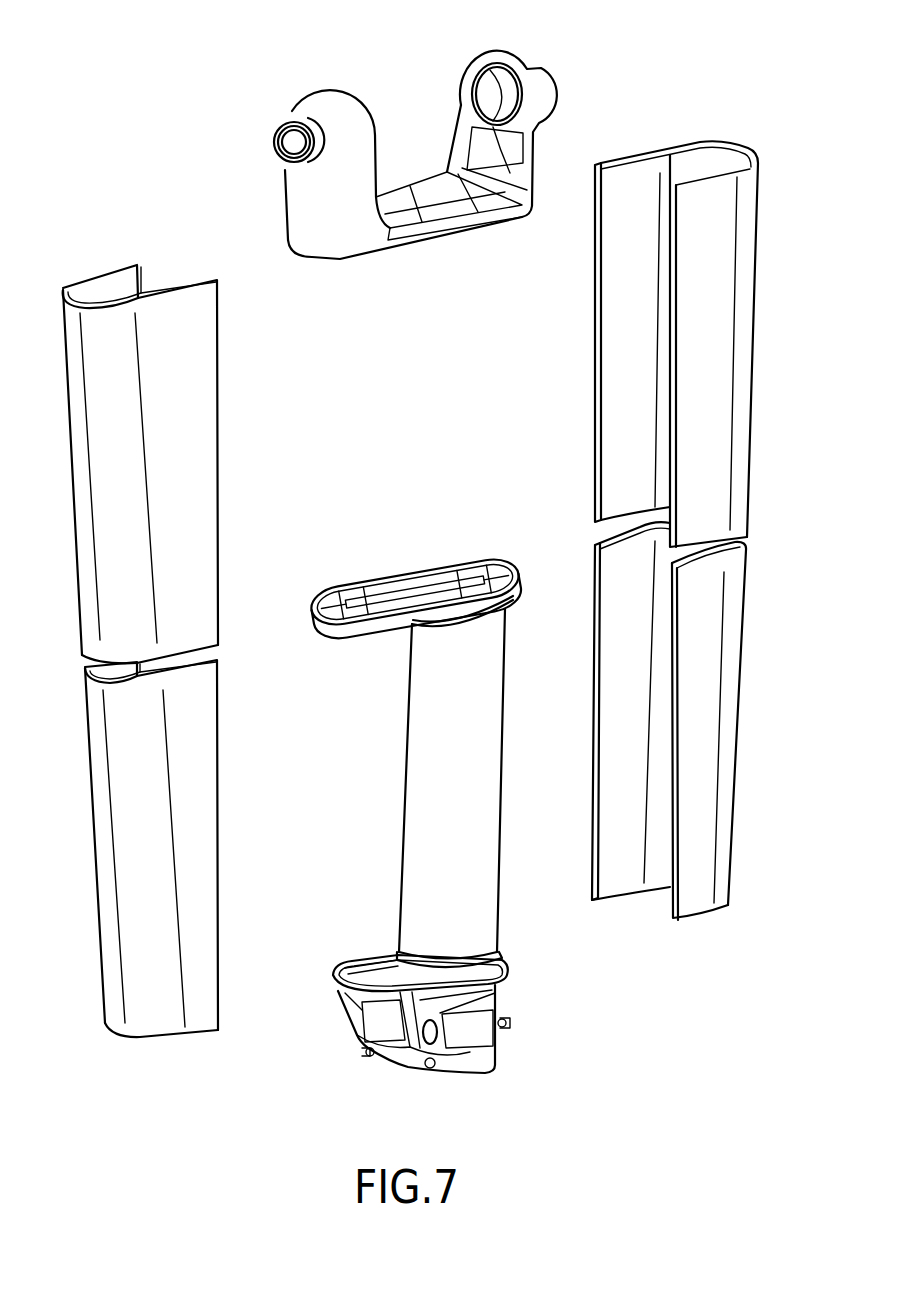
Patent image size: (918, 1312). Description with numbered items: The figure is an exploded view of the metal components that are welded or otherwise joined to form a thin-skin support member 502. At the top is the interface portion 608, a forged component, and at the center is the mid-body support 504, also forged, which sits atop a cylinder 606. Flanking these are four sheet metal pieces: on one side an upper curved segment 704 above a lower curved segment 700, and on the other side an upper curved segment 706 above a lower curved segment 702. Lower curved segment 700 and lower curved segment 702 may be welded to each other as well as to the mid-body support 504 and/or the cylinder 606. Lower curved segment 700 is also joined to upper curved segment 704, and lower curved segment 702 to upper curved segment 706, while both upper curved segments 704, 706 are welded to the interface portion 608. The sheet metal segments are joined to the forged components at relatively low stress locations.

The thin-skin support member 502 is at (171, 99).
The mid-body support 504 is at (408, 578).
The cylinder 606 is at (478, 890).
The interface portion 608 is at (477, 147).
The lower curved segment 700 is at (106, 922).
The lower curved segment 702 is at (707, 765).
The upper curved segment 704 is at (85, 480).
The upper curved segment 706 is at (720, 347).